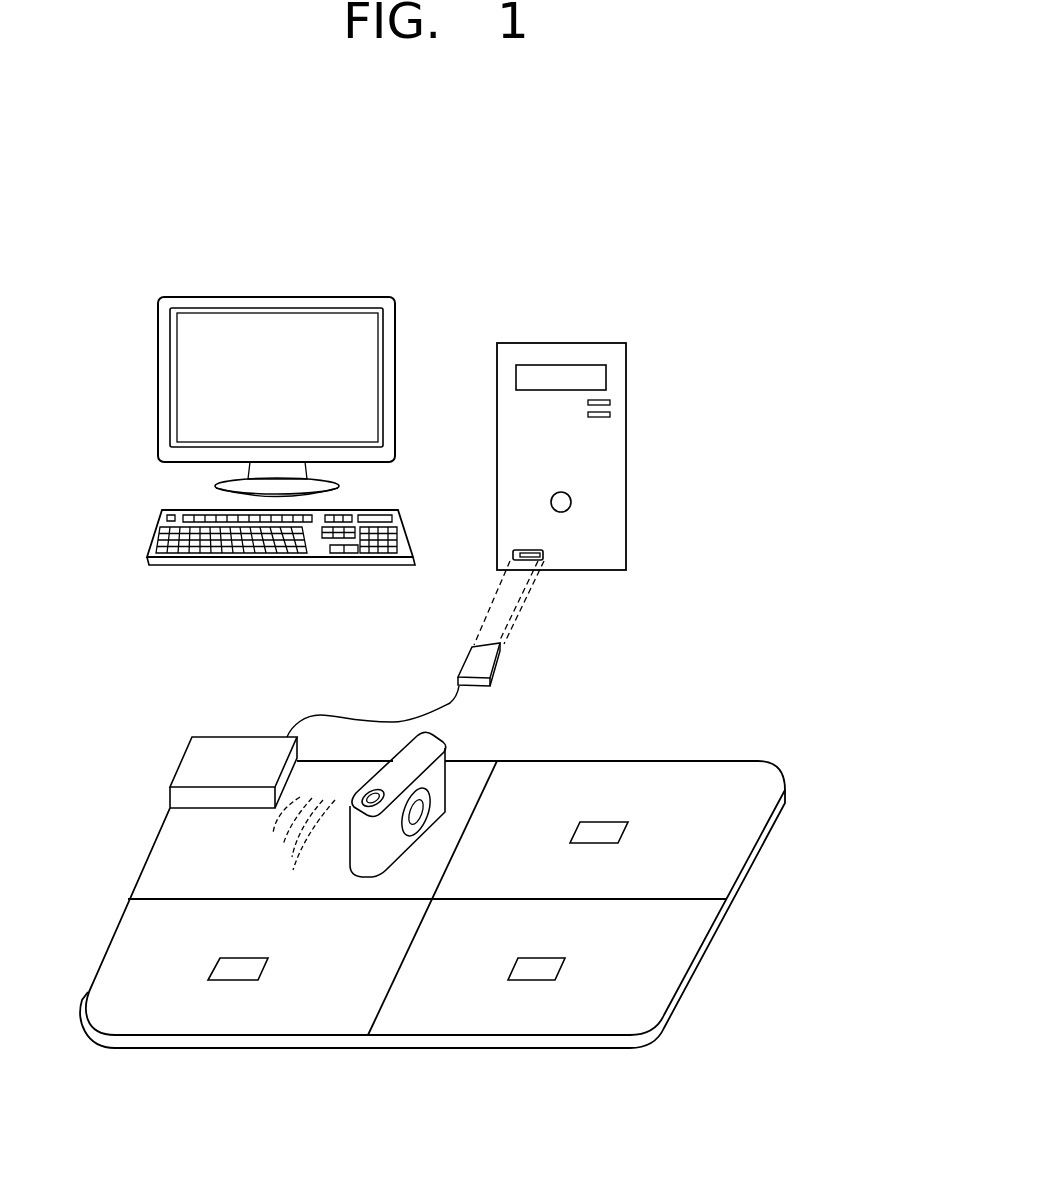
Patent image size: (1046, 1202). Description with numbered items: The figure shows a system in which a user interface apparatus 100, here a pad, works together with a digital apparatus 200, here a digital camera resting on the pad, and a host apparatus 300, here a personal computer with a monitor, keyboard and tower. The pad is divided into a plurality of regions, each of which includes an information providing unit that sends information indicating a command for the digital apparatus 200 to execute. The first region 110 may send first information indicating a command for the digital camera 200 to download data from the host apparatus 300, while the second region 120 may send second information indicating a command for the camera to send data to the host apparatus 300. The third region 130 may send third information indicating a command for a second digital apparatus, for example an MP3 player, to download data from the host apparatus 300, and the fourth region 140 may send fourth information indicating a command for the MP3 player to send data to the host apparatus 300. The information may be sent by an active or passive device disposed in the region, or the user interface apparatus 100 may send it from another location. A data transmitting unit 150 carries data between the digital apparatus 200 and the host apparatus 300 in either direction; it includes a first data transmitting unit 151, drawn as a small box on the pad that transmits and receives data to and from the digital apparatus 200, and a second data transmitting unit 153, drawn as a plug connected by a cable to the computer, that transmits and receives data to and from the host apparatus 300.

The user interface apparatus 100 is at (768, 977).
The first region 110 is at (163, 857).
The second region 120 is at (228, 1010).
The third region 130 is at (677, 775).
The fourth region 140 is at (575, 1010).
The data transmitting unit 150 is at (328, 637).
The first data transmitting unit 151 is at (218, 747).
The second data transmitting unit 153 is at (473, 658).
The digital apparatus 200 is at (433, 743).
The host apparatus 300 is at (690, 585).